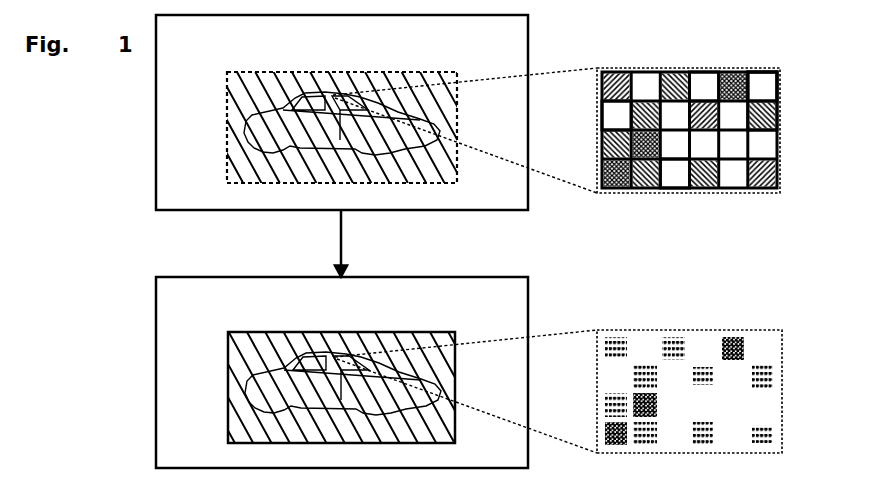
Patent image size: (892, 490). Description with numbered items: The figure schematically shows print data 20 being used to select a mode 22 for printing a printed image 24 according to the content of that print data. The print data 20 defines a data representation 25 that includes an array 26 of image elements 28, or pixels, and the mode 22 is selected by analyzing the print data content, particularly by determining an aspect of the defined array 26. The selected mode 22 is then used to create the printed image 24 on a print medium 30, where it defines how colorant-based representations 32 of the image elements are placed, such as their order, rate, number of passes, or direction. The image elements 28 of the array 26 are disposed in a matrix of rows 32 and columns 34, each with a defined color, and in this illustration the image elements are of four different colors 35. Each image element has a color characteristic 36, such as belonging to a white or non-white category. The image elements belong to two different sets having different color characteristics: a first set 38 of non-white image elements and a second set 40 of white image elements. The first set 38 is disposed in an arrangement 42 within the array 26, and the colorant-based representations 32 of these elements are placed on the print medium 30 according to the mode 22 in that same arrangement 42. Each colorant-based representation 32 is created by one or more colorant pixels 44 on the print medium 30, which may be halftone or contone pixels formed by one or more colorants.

The print data 20 is at (156, 172).
The mode 22 is at (421, 240).
The printed image 24 is at (228, 372).
The data representation 25 is at (226, 110).
The array 26 is at (635, 64).
The image elements 28 is at (704, 80).
The print medium 30 is at (156, 432).
The colorant-based representations 32 is at (786, 107).
The columns 34 is at (760, 52).
The colors 35 is at (610, 168).
The color characteristic 36 is at (765, 115).
The first set 38 is at (615, 192).
The second set 40 is at (673, 192).
The arrangement 42 is at (762, 180).
The colorant pixels 44 is at (786, 362).